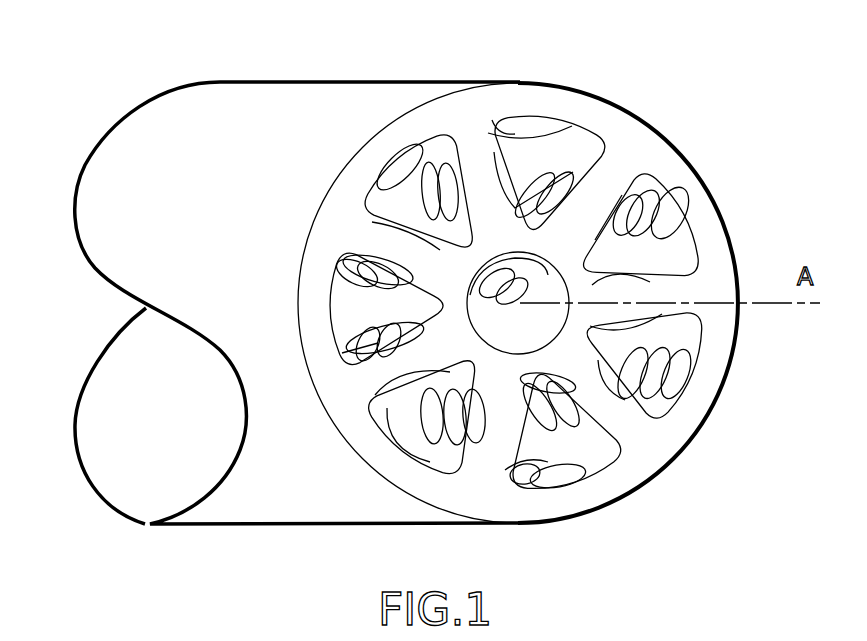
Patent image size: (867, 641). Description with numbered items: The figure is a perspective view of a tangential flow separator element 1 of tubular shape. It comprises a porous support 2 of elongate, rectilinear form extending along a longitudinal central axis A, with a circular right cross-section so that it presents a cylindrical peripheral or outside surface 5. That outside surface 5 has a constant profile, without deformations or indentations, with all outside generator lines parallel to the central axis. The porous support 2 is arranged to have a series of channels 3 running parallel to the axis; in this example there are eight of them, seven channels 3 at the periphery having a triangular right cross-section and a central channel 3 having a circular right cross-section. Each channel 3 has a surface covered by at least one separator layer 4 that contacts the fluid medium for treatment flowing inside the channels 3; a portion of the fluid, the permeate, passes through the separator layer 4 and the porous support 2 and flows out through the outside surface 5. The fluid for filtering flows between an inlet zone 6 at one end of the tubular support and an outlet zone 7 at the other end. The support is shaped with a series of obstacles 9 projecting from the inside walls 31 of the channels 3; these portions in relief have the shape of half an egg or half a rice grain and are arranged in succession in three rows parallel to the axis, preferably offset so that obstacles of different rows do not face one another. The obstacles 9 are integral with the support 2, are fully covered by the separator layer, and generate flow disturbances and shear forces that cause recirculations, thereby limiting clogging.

The tangential flow separator element 1 is at (742, 113).
The porous support 2 is at (617, 118).
The channels 3 is at (683, 258).
The inside wall 31 is at (420, 312).
The separator layer 4 is at (433, 101).
The outside surface 5 is at (324, 80).
The inlet zone 6 is at (702, 407).
The outlet zone 7 is at (86, 137).
The obstacles 9 is at (452, 192).